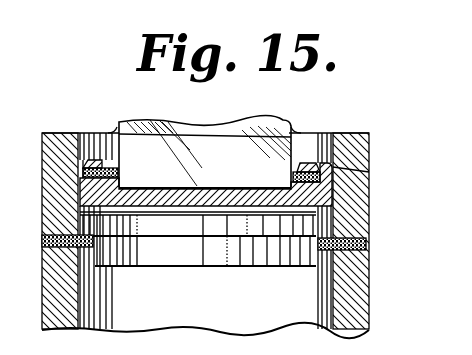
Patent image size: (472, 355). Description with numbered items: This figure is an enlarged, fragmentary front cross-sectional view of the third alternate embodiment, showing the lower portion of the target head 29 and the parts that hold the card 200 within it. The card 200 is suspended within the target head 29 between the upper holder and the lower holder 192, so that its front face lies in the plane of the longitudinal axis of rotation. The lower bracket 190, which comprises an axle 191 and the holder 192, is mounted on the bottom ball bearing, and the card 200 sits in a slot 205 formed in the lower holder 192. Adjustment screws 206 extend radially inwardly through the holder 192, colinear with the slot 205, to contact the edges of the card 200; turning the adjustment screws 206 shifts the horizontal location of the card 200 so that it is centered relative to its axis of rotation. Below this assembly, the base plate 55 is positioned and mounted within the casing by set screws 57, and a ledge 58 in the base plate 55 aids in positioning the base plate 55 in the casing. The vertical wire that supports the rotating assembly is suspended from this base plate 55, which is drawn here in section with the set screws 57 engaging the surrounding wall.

The target head 29 is at (370, 314).
The base plate 55 is at (80, 228).
The set screws 57 is at (362, 247).
The ledge 58 is at (88, 250).
The lower bracket 190 is at (103, 157).
The axle 191 is at (146, 210).
The holder 192 is at (333, 206).
The card 200 is at (183, 125).
The slot 205 is at (290, 169).
The adjustment screws 206 is at (360, 174).